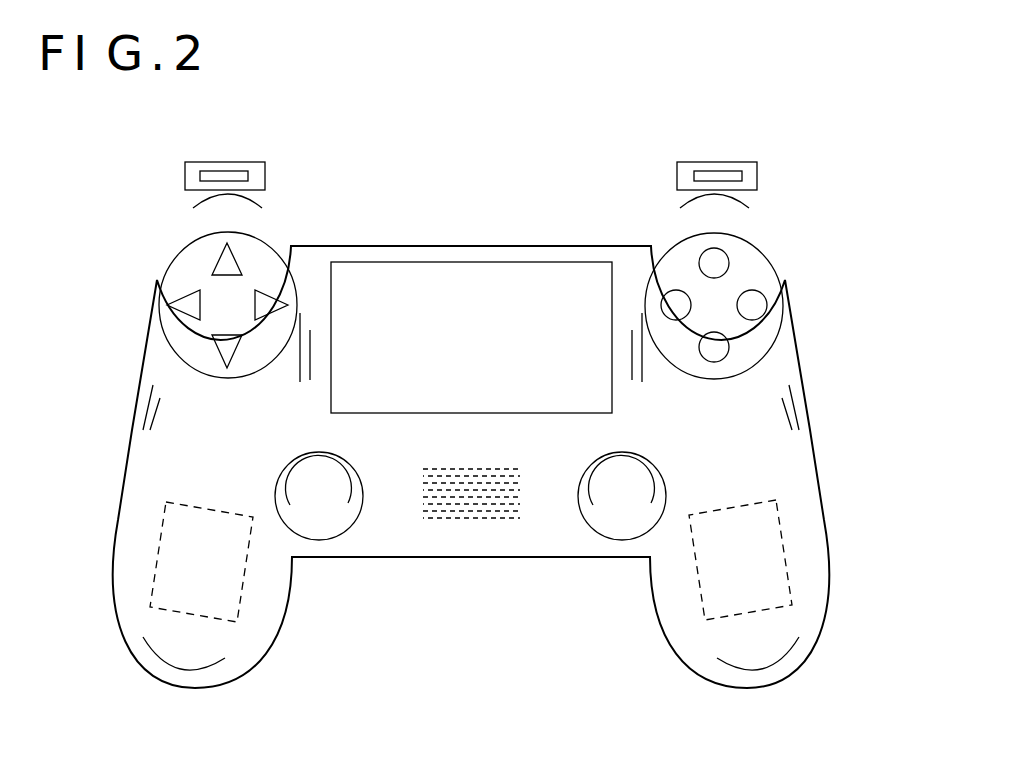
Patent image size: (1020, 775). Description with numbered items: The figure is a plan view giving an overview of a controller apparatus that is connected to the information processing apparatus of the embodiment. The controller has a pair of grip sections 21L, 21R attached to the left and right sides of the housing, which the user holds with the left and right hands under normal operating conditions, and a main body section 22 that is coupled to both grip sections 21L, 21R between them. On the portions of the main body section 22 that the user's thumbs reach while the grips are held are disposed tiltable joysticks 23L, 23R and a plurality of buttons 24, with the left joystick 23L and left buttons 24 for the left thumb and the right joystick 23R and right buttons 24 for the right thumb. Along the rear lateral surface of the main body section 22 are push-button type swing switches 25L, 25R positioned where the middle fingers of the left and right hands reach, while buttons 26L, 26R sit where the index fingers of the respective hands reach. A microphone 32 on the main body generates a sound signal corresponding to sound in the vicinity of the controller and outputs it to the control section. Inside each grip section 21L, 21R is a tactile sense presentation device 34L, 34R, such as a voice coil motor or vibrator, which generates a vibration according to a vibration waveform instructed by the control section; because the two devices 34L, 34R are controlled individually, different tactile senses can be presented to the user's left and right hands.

The grip section 21L is at (107, 591).
The grip section 21R is at (836, 602).
The main body section 22 is at (458, 244).
The joystick 23L is at (313, 522).
The joystick 23R is at (610, 522).
The buttons 24 is at (190, 272).
The swing switch 25L is at (220, 162).
The swing switch 25R is at (708, 162).
The button 26L is at (249, 178).
The button 26R is at (693, 178).
The microphone 32 is at (470, 526).
The tactile sense presentation device 34L is at (150, 560).
The tactile sense presentation device 34R is at (790, 548).